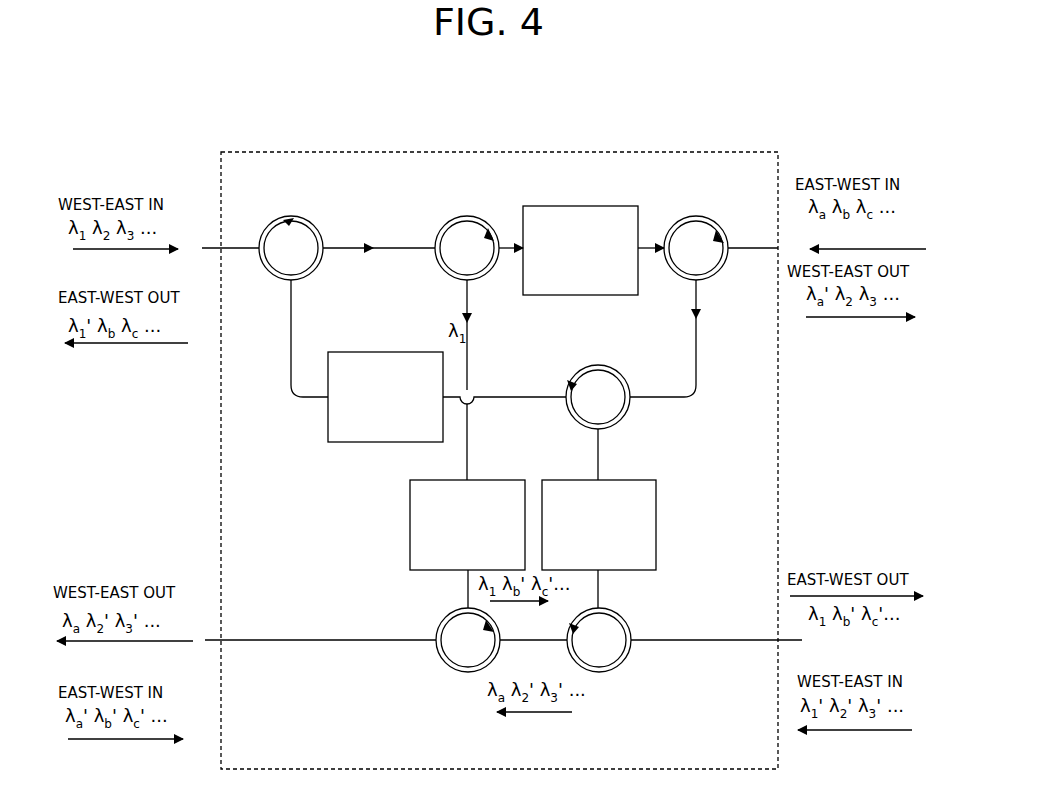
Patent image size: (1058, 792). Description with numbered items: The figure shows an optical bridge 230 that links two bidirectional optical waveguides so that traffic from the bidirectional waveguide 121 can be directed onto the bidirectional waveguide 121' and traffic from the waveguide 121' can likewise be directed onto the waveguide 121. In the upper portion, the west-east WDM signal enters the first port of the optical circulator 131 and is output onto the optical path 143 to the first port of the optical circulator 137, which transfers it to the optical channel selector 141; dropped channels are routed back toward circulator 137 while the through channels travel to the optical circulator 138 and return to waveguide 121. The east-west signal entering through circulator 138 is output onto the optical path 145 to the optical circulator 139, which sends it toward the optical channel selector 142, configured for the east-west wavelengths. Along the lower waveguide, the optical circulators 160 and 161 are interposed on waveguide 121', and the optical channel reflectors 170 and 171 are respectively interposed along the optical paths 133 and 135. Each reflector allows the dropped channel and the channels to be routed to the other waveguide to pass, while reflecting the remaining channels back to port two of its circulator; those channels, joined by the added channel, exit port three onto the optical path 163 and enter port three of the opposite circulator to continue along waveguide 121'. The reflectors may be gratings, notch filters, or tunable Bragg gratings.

The optical bridge 230 is at (580, 150).
The bidirectional optical waveguide 121 is at (500, 255).
The bidirectional optical waveguide 121' is at (507, 657).
The optical circulator 131 is at (270, 276).
The optical circulator 137 is at (445, 275).
The optical circulator 138 is at (681, 219).
The optical circulator 139 is at (599, 366).
The optical circulator 160 is at (440, 663).
The optical circulator 161 is at (623, 664).
The optical channel selector 141 is at (581, 205).
The optical channel selector 142 is at (378, 351).
The optical channel reflector 170 is at (430, 480).
The optical channel reflector 171 is at (657, 513).
The optical path 133 is at (468, 364).
The optical path 135 is at (599, 455).
The optical path 143 is at (393, 247).
The optical path 145 is at (697, 360).
The optical path 163 is at (526, 641).